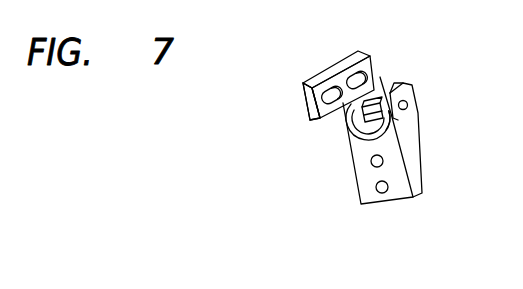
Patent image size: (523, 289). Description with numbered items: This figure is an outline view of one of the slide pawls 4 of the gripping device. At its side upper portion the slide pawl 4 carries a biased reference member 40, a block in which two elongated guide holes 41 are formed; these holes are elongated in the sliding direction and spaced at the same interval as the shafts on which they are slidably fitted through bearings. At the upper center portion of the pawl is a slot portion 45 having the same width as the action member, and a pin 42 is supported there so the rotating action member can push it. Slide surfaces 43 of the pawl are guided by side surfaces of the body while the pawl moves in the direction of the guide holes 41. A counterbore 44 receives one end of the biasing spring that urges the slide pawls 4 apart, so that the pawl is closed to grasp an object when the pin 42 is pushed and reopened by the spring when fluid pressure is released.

The slide pawl 4 is at (364, 202).
The reference member 40 is at (309, 109).
The elongated guide hole 41 is at (332, 121).
The pin 42 is at (372, 104).
The slide surface 43 is at (303, 85).
The counterbore 44 is at (378, 140).
The slot portion 45 is at (387, 138).